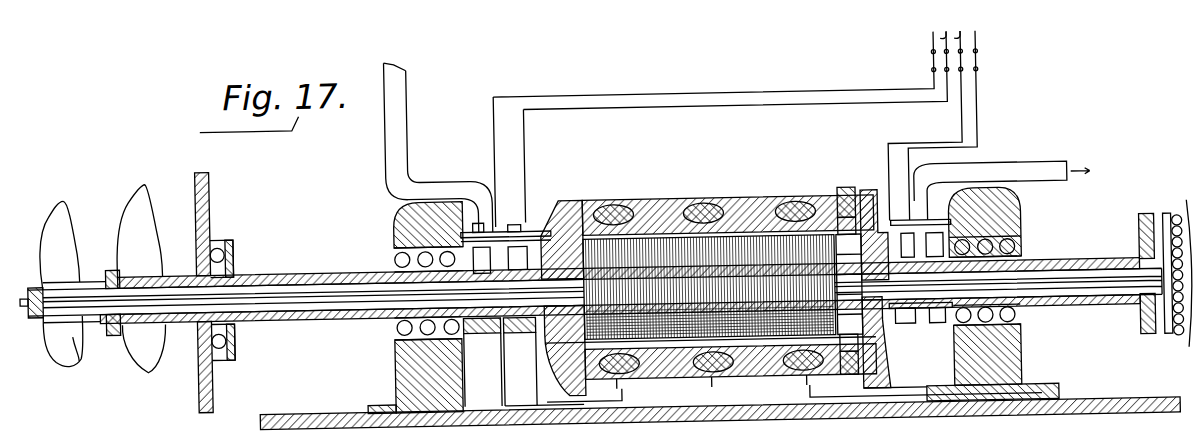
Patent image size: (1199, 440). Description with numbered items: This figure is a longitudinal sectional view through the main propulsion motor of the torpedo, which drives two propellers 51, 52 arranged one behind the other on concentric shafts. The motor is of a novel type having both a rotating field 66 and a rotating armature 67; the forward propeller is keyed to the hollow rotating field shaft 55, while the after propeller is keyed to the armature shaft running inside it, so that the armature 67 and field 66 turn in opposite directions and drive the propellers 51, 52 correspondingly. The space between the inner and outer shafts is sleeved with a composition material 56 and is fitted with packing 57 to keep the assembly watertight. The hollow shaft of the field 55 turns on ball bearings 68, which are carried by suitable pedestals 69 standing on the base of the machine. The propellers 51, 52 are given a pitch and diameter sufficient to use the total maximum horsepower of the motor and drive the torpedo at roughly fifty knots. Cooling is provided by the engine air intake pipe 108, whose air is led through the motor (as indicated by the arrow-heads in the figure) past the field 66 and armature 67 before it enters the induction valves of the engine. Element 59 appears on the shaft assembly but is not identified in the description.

The propeller 51 is at (73, 362).
The propeller 52 is at (147, 368).
The rotating field shaft 55 is at (307, 298).
The composition material 56 is at (240, 290).
The packing 57 is at (103, 286).
The shaft sleeve 59 is at (318, 288).
The rotating field 66 is at (582, 214).
The rotating armature 67 is at (645, 252).
The bearings 68 is at (702, 211).
The pedestals 69 is at (396, 374).
The engine air intake pipe 108 is at (402, 135).